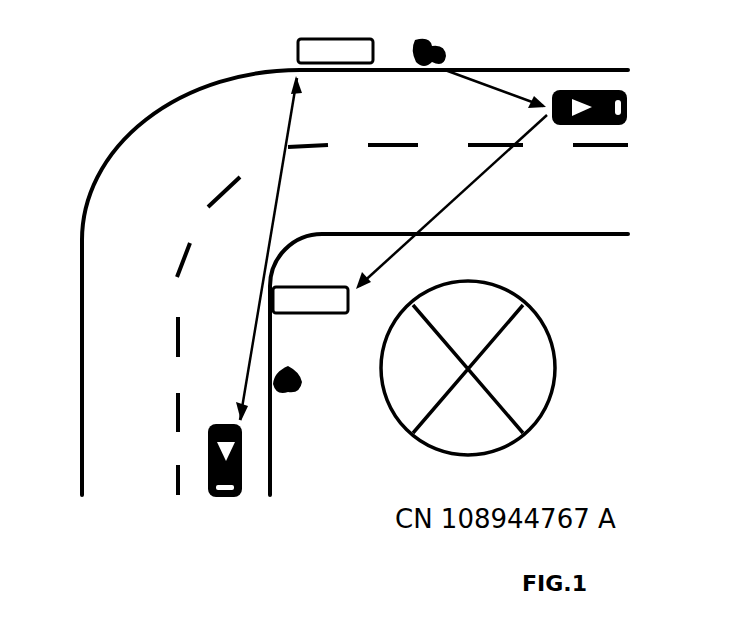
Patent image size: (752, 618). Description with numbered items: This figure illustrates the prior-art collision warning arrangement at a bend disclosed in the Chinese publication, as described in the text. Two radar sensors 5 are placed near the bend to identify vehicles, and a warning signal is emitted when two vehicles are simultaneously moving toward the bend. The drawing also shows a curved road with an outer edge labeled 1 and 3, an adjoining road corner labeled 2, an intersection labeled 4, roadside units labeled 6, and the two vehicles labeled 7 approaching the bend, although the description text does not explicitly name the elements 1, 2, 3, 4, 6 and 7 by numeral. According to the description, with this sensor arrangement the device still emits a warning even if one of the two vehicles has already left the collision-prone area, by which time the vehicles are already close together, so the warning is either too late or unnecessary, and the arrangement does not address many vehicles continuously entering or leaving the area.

The curved road 1 is at (193, 150).
The road intersection corner 2 is at (570, 200).
The road edge 3 is at (105, 435).
The intersection 4 is at (527, 370).
The radar sensor 5 is at (440, 42).
The roadside unit 6 is at (300, 45).
The vehicle 7 is at (588, 88).